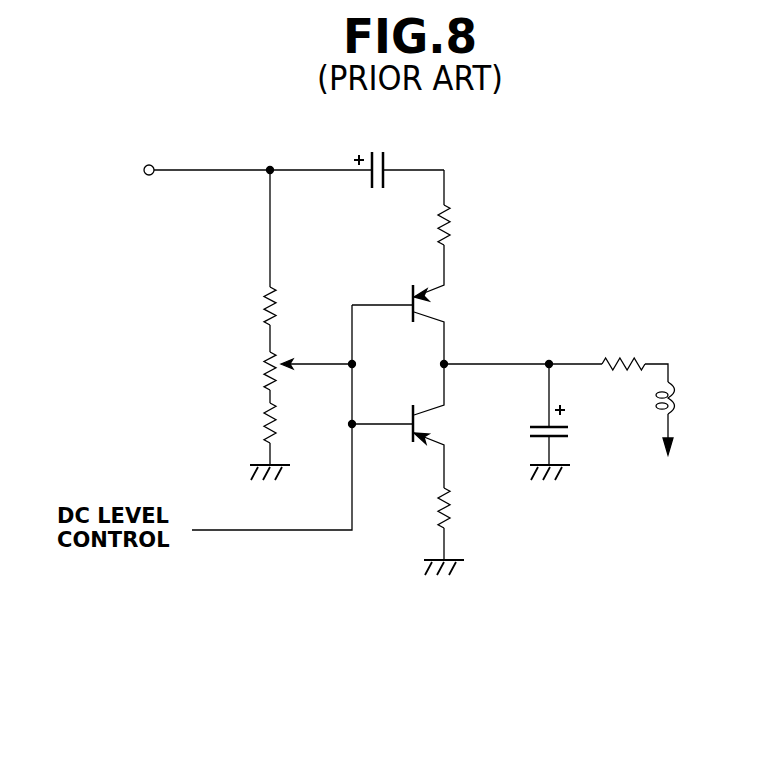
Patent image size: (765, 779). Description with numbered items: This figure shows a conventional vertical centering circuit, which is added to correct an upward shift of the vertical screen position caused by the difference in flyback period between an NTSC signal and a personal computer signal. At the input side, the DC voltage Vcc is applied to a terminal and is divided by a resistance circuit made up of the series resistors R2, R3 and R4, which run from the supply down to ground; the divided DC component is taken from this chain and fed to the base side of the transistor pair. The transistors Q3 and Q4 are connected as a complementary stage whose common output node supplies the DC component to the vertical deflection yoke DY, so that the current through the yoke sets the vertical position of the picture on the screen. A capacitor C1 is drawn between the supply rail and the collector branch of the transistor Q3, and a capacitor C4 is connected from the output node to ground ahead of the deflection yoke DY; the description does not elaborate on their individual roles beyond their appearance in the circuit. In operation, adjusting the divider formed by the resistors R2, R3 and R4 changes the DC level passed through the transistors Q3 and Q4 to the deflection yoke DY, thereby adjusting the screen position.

The DC voltage Vcc is at (231, 170).
The capacitor C1 is at (399, 158).
The resistance circuit resistor R2 is at (250, 261).
The resistance circuit resistor R3 is at (288, 377).
The resistance circuit resistor R4 is at (257, 441).
The transistor Q3 is at (412, 267).
The transistor Q4 is at (412, 469).
The capacitor C4 is at (566, 422).
The vertical deflection yoke DY is at (658, 406).